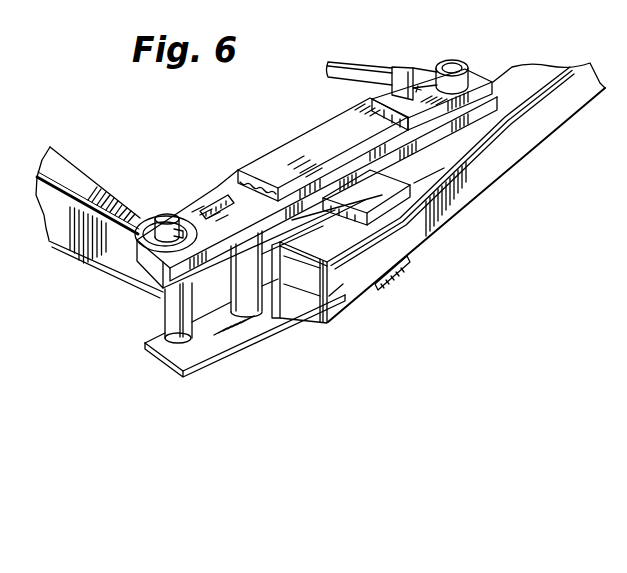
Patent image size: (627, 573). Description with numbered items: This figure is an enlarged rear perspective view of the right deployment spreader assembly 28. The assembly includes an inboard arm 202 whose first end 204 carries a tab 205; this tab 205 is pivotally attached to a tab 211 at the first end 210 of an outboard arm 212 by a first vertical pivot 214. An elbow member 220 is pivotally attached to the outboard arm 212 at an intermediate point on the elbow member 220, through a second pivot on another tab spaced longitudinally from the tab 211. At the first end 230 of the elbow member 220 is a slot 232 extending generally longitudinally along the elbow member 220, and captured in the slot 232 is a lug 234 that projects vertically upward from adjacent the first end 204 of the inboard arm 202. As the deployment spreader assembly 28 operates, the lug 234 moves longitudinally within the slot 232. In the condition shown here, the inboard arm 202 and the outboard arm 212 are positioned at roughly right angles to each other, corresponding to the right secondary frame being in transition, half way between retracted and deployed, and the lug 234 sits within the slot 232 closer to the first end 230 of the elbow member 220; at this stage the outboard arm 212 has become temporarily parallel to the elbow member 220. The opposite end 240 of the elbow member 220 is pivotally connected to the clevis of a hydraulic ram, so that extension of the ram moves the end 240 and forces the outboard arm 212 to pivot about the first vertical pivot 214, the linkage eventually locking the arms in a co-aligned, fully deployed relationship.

The inboard arm 202 is at (73, 175).
The first end 204 is at (164, 314).
The tab 205 is at (290, 320).
The first end 210 is at (334, 314).
The tab 211 is at (337, 286).
The outboard arm 212 is at (483, 177).
The first vertical pivot 214 is at (266, 366).
The elbow member 220 is at (270, 163).
The first end 230 is at (147, 265).
The slot 232 is at (218, 199).
The lug 234 is at (164, 216).
The opposite end 240 is at (490, 82).
The right deployment spreader assembly 28 is at (410, 266).